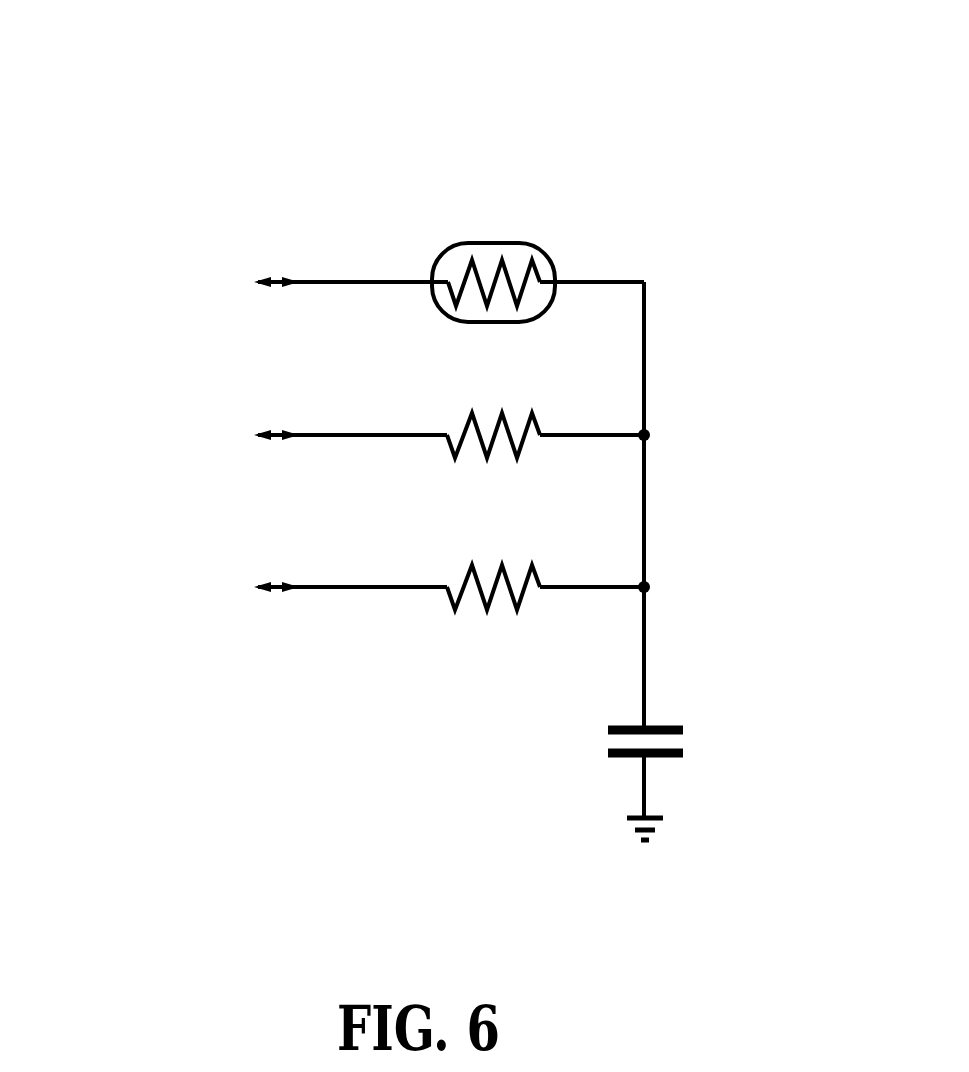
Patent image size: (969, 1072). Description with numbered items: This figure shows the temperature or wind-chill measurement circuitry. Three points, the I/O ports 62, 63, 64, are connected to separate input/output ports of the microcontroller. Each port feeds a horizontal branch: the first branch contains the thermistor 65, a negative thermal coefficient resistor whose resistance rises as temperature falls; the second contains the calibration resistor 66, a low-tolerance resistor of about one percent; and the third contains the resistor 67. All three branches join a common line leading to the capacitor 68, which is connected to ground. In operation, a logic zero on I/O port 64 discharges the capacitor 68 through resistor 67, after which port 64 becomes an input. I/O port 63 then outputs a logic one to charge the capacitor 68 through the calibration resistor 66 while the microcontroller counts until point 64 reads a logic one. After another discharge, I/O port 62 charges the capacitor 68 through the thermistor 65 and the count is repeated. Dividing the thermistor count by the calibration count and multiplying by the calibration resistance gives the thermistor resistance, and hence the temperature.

The I/O port 62 is at (268, 278).
The I/O port 63 is at (268, 432).
The I/O port 64 is at (268, 590).
The thermistor 65 is at (495, 243).
The calibration resistor 66 is at (472, 415).
The resistor 67 is at (483, 615).
The capacitor 68 is at (683, 729).